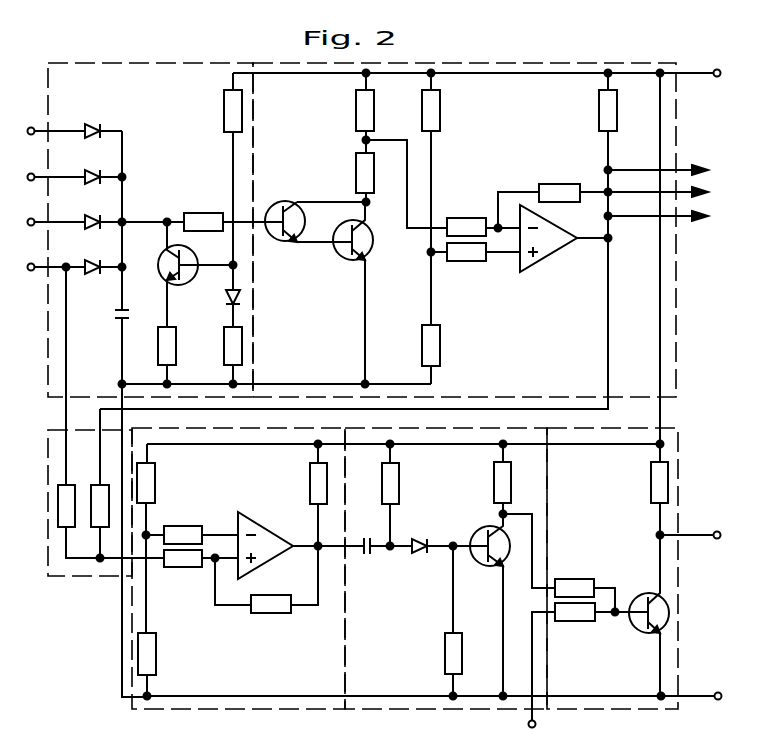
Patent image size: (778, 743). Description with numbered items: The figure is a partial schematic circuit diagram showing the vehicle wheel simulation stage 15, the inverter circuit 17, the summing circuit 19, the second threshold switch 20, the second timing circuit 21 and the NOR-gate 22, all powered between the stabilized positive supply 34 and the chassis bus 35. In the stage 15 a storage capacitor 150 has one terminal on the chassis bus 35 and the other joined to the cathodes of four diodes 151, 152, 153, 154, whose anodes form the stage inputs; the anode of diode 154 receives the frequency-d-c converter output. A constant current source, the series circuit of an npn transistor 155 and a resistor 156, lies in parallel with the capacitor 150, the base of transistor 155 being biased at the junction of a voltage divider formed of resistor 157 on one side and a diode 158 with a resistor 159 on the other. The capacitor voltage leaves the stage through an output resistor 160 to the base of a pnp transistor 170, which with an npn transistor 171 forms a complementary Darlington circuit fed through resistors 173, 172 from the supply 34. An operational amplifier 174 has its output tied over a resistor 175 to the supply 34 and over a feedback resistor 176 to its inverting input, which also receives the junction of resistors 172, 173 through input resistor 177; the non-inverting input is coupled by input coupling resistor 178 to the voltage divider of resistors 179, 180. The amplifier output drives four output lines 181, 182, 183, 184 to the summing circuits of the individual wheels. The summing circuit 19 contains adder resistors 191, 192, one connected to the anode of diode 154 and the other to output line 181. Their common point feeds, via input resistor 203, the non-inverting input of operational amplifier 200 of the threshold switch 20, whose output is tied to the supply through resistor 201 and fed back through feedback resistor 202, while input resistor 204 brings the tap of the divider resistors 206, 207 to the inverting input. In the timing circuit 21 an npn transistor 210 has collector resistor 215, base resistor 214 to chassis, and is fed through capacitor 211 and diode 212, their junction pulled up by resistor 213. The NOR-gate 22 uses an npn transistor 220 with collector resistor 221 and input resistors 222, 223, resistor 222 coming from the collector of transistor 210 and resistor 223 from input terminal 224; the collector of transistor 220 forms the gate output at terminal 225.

The vehicle wheel simulation stage 15 is at (165, 76).
The inverter circuit 17 is at (503, 66).
The summing circuit 19 is at (77, 578).
The second threshold switch 20 is at (237, 707).
The second timing circuit 21 is at (392, 707).
The NOR-gate 22 is at (597, 707).
The stabilized positive supply 34 is at (716, 70).
The chassis bus 35 is at (445, 374).
The storage capacitor 150 is at (114, 314).
The diode 151 is at (99, 126).
The diode 152 is at (92, 172).
The diode 153 is at (88, 214).
The diode 154 is at (88, 262).
The npn transistor 155 is at (168, 268).
The resistor 156 is at (158, 338).
The resistor 157 is at (224, 112).
The diode 158 is at (225, 298).
The resistor 159 is at (223, 348).
The output resistor 160 is at (201, 213).
The pnp transistor 170 is at (283, 203).
The npn transistor 171 is at (342, 258).
The resistor 172 is at (370, 102).
The resistor 173 is at (355, 167).
The operational amplifier 174 is at (545, 252).
The resistor 175 is at (599, 112).
The feedback resistor 176 is at (550, 184).
The input resistor 177 is at (468, 218).
The input coupling resistor 178 is at (469, 262).
The resistor 179 is at (441, 106).
The resistor 180 is at (441, 344).
The output line 181 is at (610, 309).
The output line 182 is at (684, 220).
The output line 183 is at (690, 190).
The output line 184 is at (685, 168).
The adder resistor 191 is at (72, 492).
The adder resistor 192 is at (97, 526).
The operational amplifier 200 is at (255, 530).
The resistor 201 is at (310, 474).
The feedback resistor 202 is at (272, 613).
The input resistor 203 is at (185, 567).
The input resistor 204 is at (172, 526).
The resistor 206 is at (156, 470).
The resistor 207 is at (157, 653).
The npn transistor 210 is at (481, 527).
The capacitor 211 is at (366, 537).
The diode 212 is at (420, 554).
The resistor 213 is at (399, 483).
The resistor 214 is at (444, 654).
The resistor 215 is at (494, 472).
The npn transistor 220 is at (634, 596).
The collector resistor 221 is at (651, 490).
The input resistor 222 is at (571, 579).
The input resistor 223 is at (578, 622).
The input terminal 224 is at (528, 724).
The terminal 225 is at (690, 524).